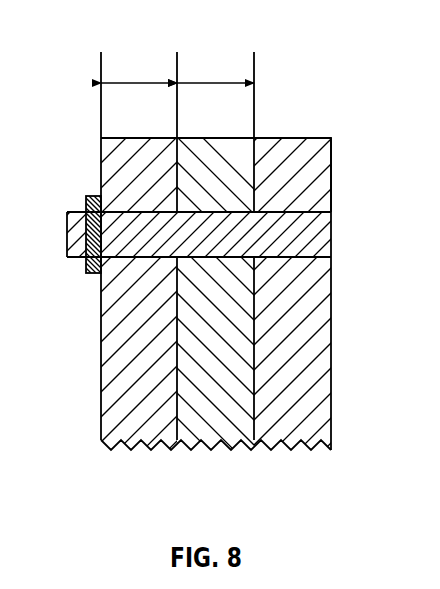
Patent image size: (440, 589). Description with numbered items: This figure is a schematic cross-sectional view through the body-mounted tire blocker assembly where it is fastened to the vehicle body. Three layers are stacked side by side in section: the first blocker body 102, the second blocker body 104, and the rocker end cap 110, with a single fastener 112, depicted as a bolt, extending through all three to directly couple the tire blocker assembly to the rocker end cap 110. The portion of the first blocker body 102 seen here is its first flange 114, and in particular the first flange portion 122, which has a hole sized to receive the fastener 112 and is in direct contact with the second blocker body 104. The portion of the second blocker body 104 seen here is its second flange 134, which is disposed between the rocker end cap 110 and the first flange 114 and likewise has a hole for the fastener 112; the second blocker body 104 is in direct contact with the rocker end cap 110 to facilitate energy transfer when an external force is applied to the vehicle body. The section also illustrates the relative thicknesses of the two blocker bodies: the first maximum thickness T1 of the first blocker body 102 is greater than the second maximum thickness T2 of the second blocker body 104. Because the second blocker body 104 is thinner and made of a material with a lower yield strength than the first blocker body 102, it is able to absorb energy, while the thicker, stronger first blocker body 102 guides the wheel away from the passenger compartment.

The rocker end cap 110 is at (288, 146).
The fastener 112 is at (318, 233).
The first flange 114 is at (114, 397).
The first flange portion 122 is at (101, 163).
The second flange 134 is at (247, 300).
The first blocker body 102 is at (130, 432).
The second blocker body 104 is at (232, 432).
The first maximum thickness T1 is at (140, 82).
The second maximum thickness T2 is at (215, 82).